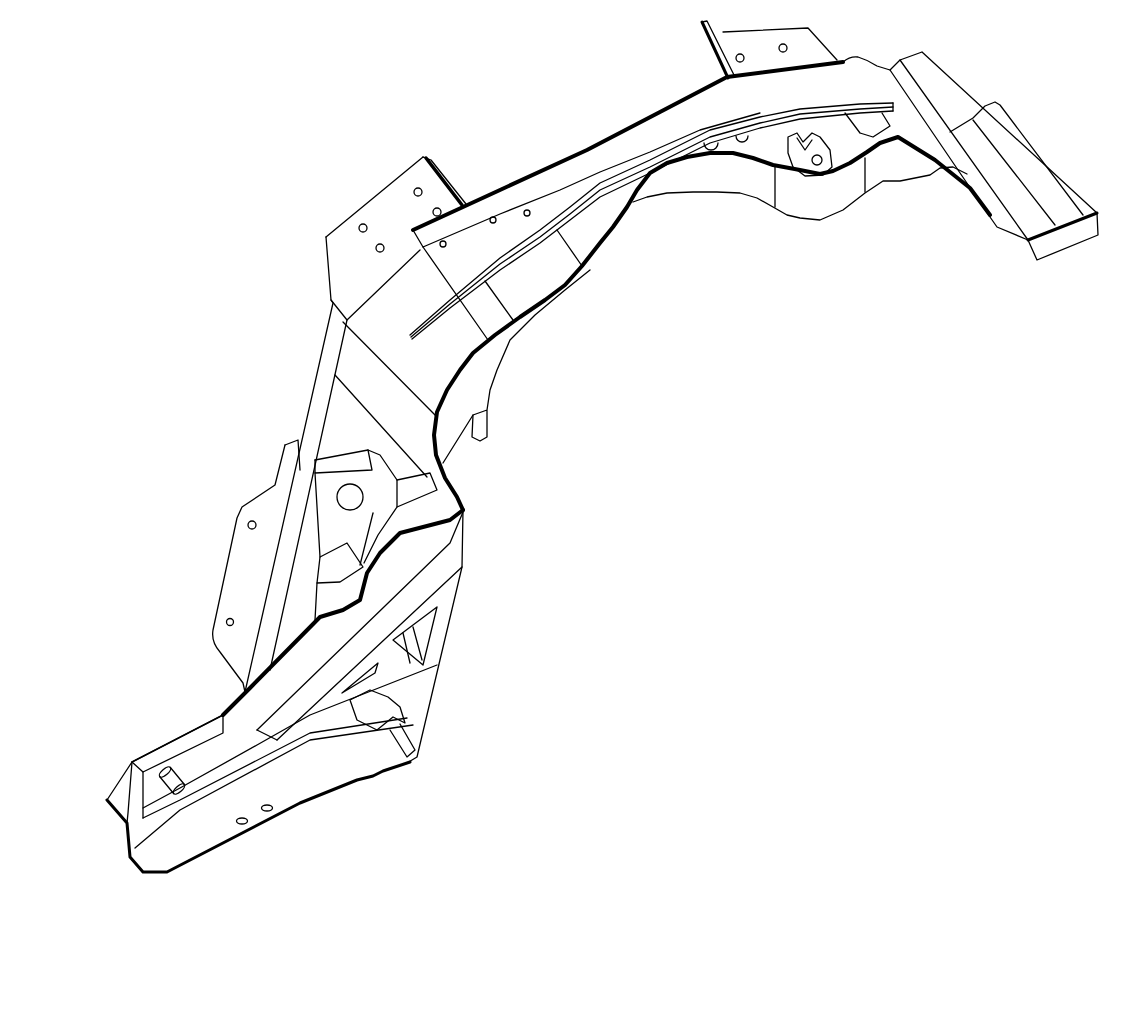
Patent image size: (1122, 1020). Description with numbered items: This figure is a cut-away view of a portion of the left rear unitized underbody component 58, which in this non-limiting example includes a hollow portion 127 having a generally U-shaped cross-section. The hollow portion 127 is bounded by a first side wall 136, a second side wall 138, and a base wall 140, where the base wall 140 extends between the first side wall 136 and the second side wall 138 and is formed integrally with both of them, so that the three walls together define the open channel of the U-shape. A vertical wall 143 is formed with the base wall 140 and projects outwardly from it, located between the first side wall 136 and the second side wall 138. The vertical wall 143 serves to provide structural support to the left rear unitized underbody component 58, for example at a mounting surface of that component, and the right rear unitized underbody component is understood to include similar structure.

The left rear unitized underbody component 58 is at (602, 461).
The hollow portion 127 is at (826, 140).
The first side wall 136 is at (683, 117).
The second side wall 138 is at (620, 176).
The base wall 140 is at (590, 215).
The vertical wall 143 is at (535, 222).